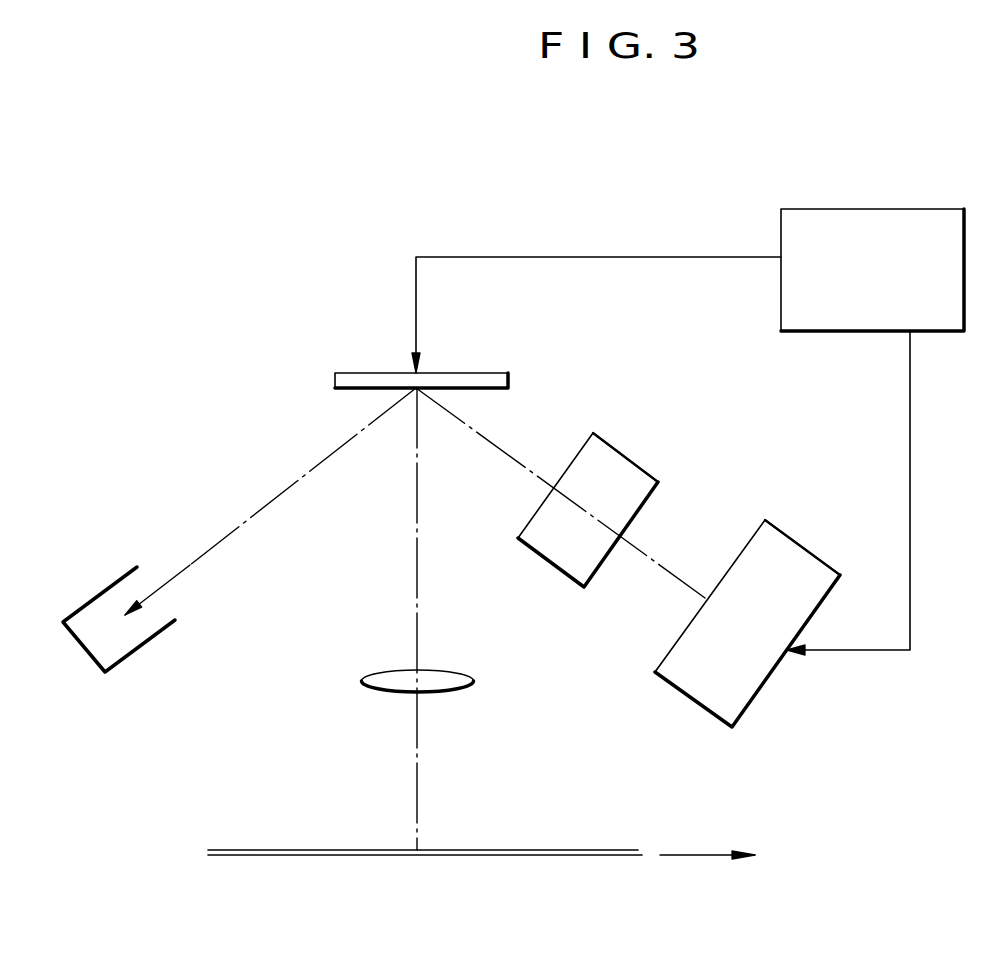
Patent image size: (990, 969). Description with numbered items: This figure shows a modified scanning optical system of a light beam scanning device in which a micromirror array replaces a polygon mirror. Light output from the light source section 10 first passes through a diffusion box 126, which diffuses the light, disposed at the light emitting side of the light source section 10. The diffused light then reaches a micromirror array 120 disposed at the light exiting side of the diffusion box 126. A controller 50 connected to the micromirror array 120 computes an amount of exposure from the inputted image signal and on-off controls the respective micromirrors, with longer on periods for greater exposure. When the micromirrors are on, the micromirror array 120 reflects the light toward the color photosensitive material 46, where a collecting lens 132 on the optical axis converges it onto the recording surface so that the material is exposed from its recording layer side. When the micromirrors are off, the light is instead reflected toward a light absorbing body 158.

The controller 50 is at (913, 209).
The micromirror array 120 is at (363, 373).
The diffusion box 126 is at (531, 520).
The light source section 10 is at (793, 540).
The light absorbing body 158 is at (84, 648).
The collecting lens 132 is at (380, 672).
The color photosensitive material 46 is at (318, 857).